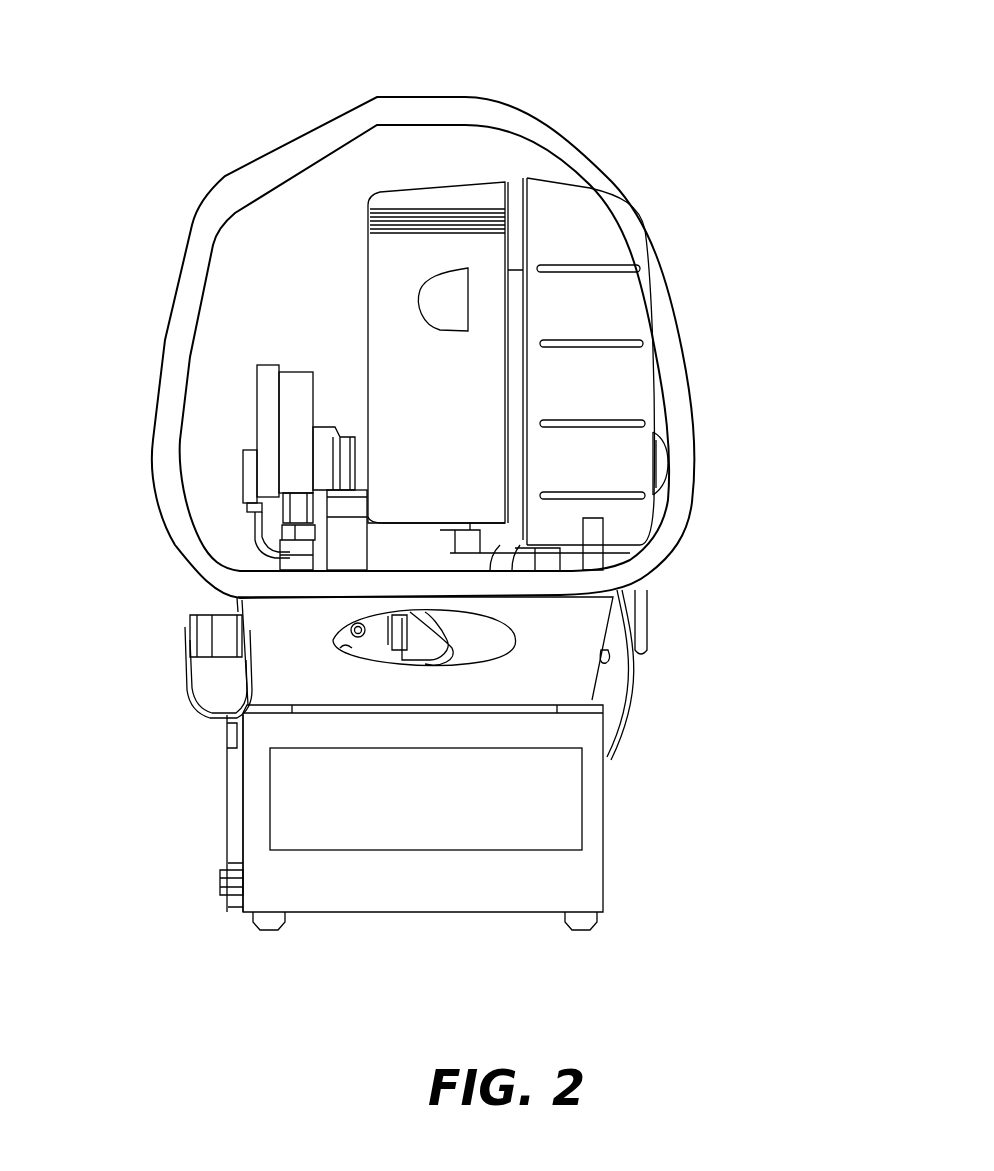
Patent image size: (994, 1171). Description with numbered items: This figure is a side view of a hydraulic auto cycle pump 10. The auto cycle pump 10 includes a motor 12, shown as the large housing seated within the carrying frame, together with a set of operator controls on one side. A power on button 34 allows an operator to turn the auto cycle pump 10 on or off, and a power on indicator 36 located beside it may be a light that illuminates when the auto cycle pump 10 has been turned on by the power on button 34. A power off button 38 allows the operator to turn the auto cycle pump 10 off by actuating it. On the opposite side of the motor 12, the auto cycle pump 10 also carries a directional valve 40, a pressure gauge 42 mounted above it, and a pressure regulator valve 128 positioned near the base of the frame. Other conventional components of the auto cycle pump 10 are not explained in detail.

The auto cycle pump 10 is at (690, 124).
The motor 12 is at (515, 317).
The power on button 34 is at (665, 451).
The power on indicator 36 is at (664, 462).
The power off button 38 is at (665, 485).
The directional valve 40 is at (323, 458).
The pressure gauge 42 is at (268, 422).
The pressure regulator valve 128 is at (342, 533).